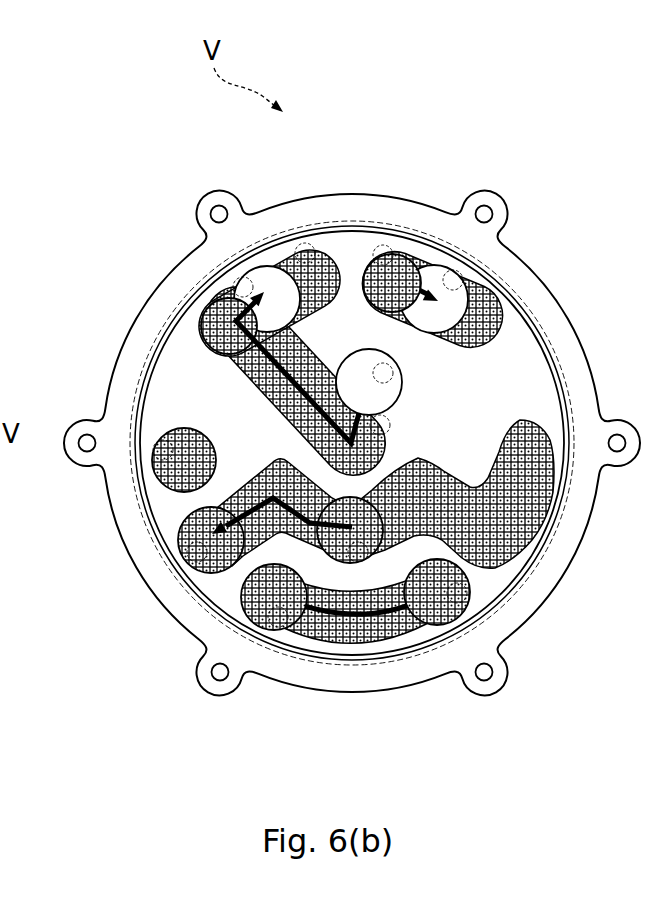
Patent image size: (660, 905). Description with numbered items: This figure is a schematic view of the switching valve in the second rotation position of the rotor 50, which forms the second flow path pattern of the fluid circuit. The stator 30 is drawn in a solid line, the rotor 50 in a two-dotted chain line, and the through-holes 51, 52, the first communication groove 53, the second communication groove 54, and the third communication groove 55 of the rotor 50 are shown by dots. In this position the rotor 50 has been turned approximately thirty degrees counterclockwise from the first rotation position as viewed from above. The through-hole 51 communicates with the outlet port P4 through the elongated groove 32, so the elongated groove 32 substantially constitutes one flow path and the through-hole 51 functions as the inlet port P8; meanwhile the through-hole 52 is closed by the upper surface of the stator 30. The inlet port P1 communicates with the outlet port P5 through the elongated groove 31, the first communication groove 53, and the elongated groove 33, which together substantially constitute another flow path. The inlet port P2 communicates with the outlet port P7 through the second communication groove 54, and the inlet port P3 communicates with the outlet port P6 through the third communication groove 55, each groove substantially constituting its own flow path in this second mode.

The stator 30 is at (538, 262).
The elongated groove 31 is at (440, 410).
The elongated groove 32 is at (405, 262).
The elongated groove 33 is at (300, 263).
The rotor 50 is at (190, 292).
The through-hole 51 is at (378, 258).
The through-hole 52 is at (157, 432).
The first communication groove 53 is at (250, 365).
The second communication groove 54 is at (400, 595).
The third communication groove 55 is at (517, 500).
The inlet port P1 is at (527, 372).
The inlet port P2 is at (283, 622).
The inlet port P3 is at (348, 592).
The outlet port P4 is at (463, 282).
The outlet port P5 is at (238, 280).
The outlet port P6 is at (200, 567).
The outlet port P7 is at (473, 583).